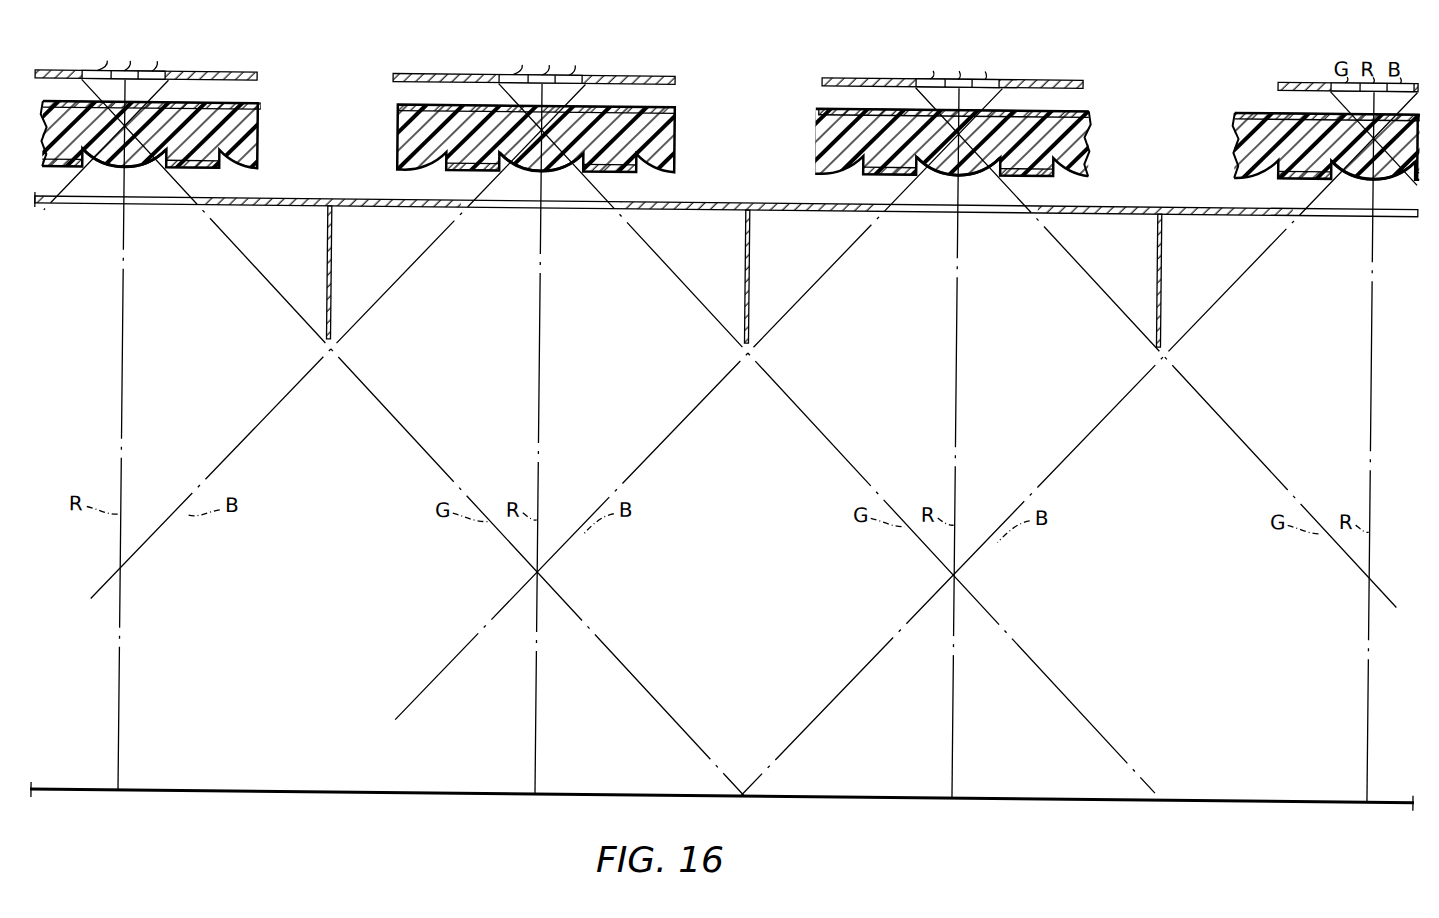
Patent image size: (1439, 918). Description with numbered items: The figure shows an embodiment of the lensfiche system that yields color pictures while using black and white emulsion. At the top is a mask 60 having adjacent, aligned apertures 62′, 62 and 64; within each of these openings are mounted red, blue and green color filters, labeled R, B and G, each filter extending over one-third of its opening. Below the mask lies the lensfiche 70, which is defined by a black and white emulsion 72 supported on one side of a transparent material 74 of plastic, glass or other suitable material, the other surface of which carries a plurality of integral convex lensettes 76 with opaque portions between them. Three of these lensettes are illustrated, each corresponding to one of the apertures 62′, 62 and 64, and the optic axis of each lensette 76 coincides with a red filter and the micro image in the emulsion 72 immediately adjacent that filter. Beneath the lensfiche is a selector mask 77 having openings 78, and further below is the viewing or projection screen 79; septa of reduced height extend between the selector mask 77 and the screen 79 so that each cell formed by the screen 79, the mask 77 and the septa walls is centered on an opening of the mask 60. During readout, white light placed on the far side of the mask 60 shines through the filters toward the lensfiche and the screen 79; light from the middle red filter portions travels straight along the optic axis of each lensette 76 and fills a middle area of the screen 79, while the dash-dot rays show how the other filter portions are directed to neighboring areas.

The mask 60 is at (662, 70).
The aperture 62 is at (565, 50).
The aperture 62' is at (953, 54).
The aperture 64 is at (157, 69).
The lensfiche 70 is at (635, 183).
The emulsion 72 is at (835, 103).
The transparent material 74 is at (267, 125).
The convex lensette 76 is at (128, 165).
The selector mask 77 is at (322, 206).
The opening 78 is at (156, 204).
The screen 79 is at (330, 787).